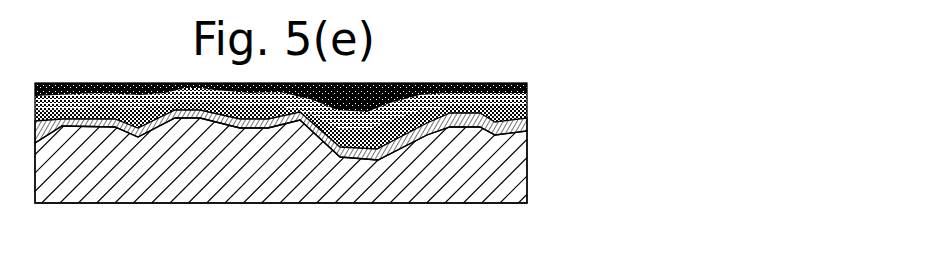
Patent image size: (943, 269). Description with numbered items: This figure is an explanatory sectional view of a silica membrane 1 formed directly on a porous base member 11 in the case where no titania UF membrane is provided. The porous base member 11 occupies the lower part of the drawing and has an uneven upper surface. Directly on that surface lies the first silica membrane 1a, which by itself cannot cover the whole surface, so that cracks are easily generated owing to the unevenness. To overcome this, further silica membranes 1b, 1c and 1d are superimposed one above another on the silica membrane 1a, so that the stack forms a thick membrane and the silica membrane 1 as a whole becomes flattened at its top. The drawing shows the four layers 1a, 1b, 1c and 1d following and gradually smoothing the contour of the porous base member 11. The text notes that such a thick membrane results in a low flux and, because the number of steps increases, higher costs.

The silica membrane 1 is at (322, 106).
The silica membrane 1a is at (525, 125).
The silica membrane 1b is at (523, 108).
The silica membrane 1c is at (524, 96).
The silica membrane 1d is at (304, 82).
The porous base member 11 is at (513, 182).